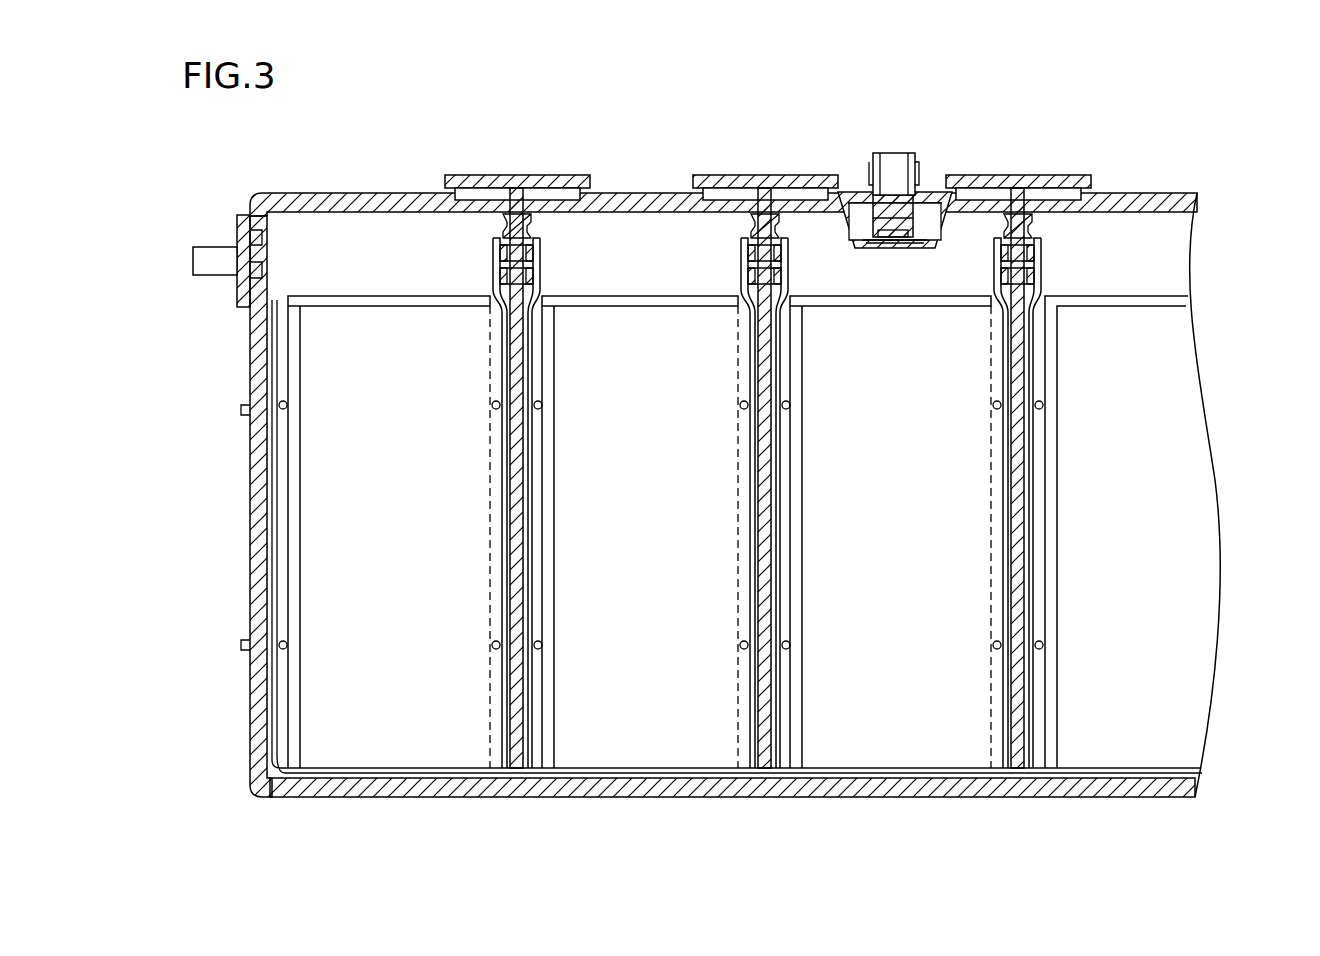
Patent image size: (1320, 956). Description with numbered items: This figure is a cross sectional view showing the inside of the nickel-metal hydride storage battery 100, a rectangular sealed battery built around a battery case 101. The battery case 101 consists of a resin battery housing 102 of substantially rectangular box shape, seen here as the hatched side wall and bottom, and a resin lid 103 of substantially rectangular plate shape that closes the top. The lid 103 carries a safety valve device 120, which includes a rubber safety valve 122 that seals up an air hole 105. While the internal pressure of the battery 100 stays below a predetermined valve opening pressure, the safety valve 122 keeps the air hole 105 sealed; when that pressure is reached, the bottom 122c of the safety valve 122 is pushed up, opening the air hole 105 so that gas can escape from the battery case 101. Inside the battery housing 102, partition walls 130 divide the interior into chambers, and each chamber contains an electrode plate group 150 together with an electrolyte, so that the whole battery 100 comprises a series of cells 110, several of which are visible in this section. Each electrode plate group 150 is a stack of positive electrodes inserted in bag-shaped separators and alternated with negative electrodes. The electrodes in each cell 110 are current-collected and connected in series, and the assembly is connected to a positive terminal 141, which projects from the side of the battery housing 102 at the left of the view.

The nickel-metal hydride storage battery 100 is at (1139, 166).
The battery case 101 is at (238, 452).
The battery housing 102 is at (262, 597).
The lid 103 is at (338, 194).
The air hole 105 is at (888, 252).
The cell 110 is at (333, 783).
The safety valve device 120 is at (868, 188).
The safety valve 122 is at (922, 188).
The bottom of the safety valve 122c is at (912, 247).
The partition wall 130 is at (507, 712).
The positive terminal 141 is at (208, 257).
The electrode plate group 150 is at (405, 718).